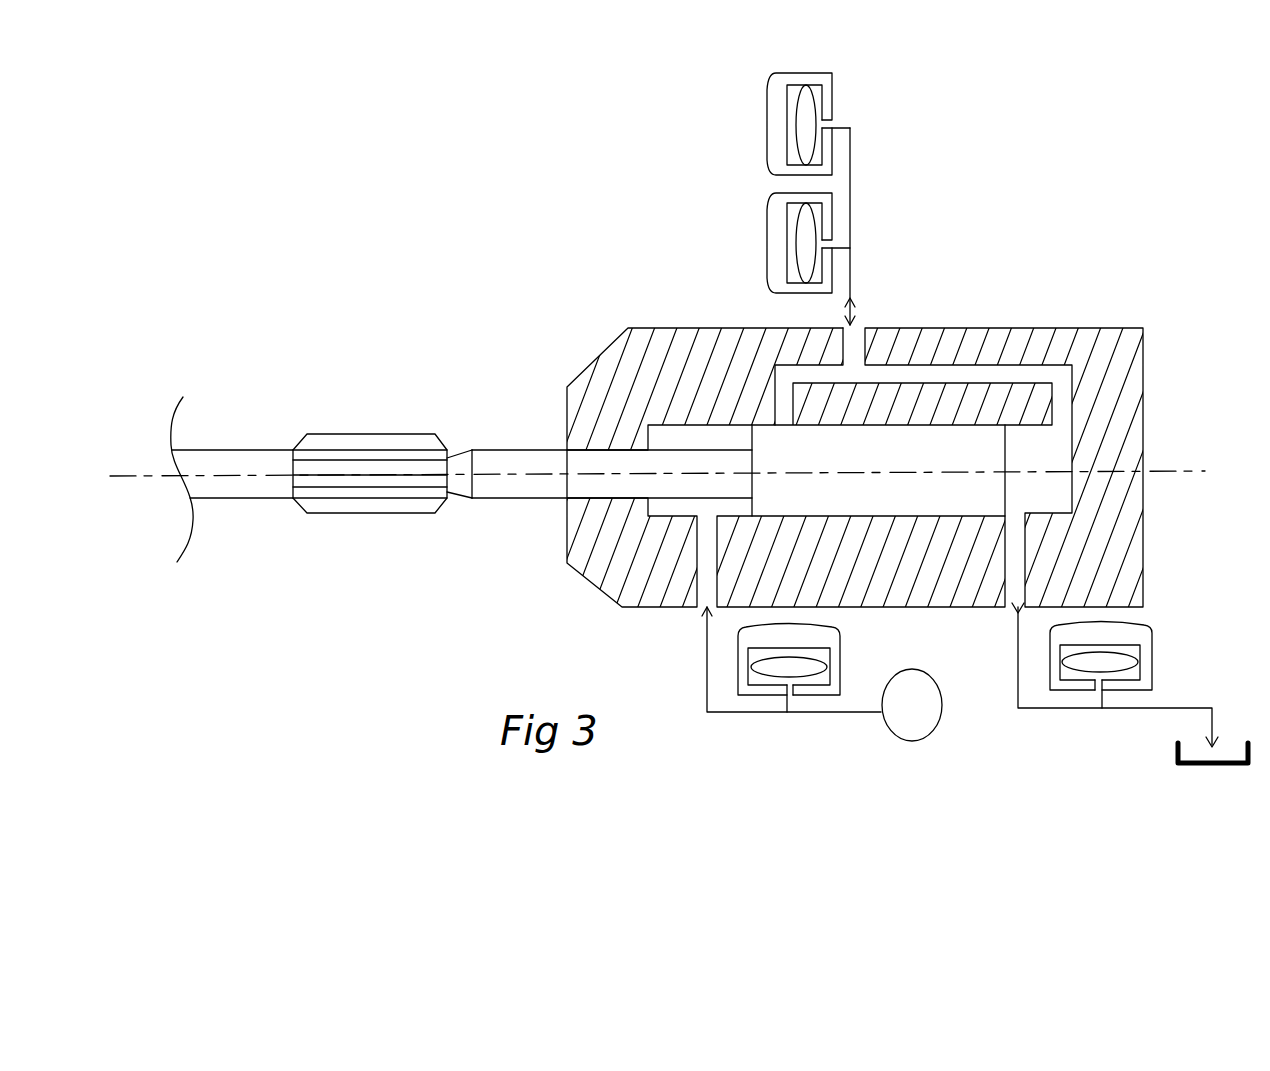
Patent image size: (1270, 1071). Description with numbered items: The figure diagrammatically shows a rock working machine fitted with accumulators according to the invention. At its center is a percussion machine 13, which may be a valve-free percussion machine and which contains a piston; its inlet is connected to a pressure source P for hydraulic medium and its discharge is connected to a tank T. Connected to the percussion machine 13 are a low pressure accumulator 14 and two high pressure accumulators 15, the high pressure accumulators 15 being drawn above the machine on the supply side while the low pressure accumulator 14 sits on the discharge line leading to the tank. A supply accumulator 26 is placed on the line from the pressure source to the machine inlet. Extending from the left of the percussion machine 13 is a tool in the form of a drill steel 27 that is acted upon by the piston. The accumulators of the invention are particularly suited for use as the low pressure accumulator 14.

The percussion machine 13 is at (1006, 266).
The low pressure accumulator 14 is at (1075, 682).
The high pressure accumulators 15 is at (772, 155).
The supply accumulator 26 is at (827, 690).
The drill steel 27 is at (278, 450).